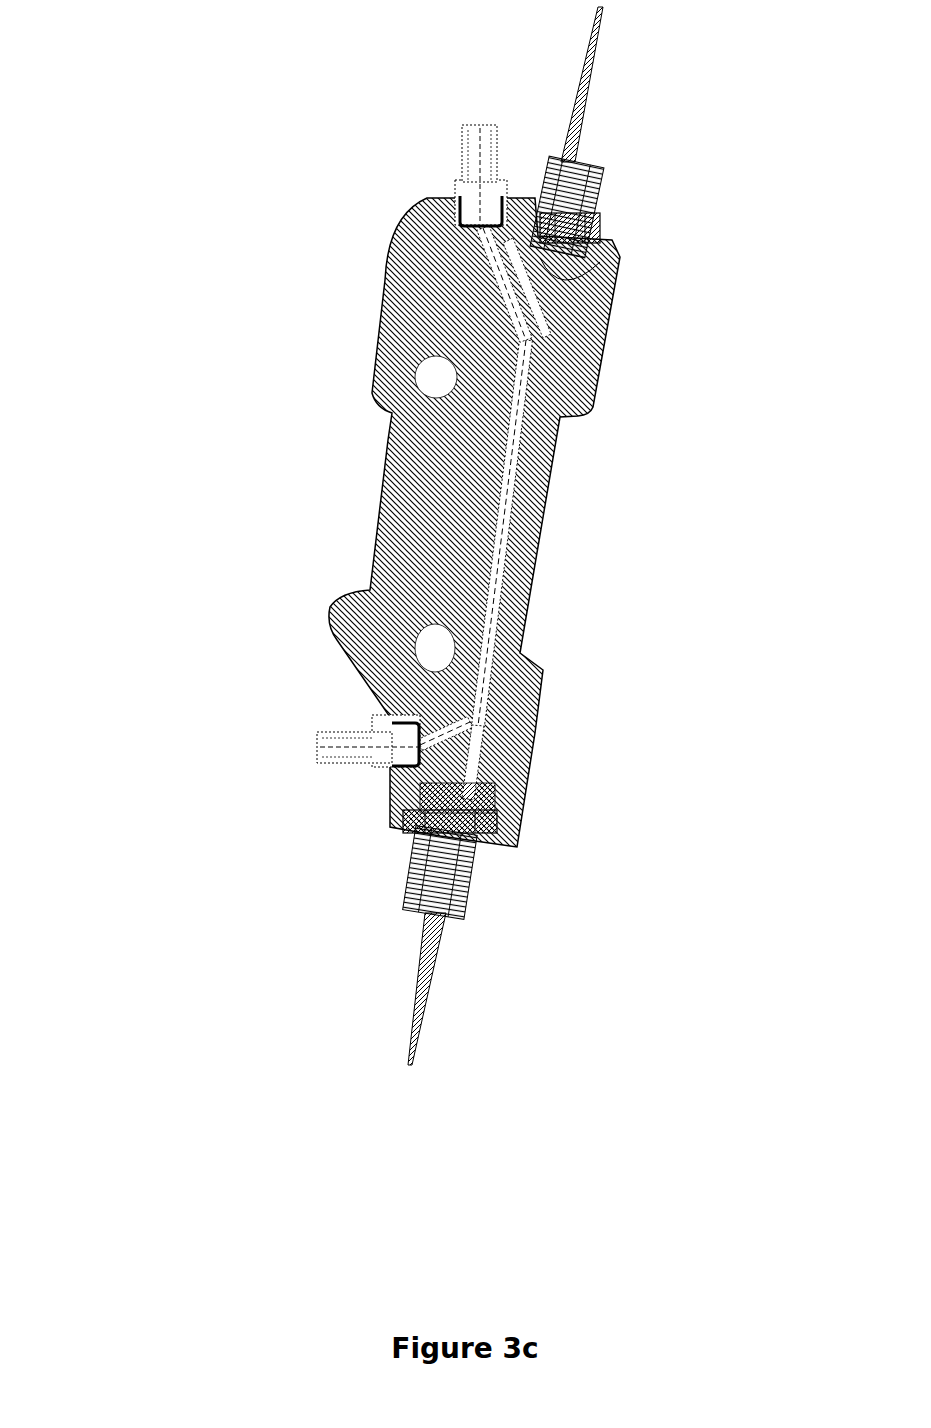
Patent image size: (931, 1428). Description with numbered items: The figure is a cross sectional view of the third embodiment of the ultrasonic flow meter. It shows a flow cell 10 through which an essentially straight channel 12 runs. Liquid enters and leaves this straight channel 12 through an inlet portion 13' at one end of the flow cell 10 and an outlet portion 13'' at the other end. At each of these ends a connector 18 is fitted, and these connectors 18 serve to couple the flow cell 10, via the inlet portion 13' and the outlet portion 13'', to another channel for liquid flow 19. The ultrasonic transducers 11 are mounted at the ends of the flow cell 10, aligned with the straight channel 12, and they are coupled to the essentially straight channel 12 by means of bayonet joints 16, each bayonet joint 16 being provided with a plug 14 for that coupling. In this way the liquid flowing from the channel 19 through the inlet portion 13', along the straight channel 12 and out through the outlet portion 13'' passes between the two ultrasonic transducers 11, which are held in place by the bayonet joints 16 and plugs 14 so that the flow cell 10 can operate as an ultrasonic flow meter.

The flow cell 10 is at (417, 497).
The ultrasonic transducer 11 is at (558, 230).
The essentially straight channel 12 is at (517, 468).
The inlet portion 13' is at (323, 706).
The outlet portion 13'' is at (339, 284).
The plug 14 is at (535, 287).
The bayonet joint 16 is at (597, 238).
The connector 18 is at (457, 187).
The channel for liquid flow 19 is at (482, 132).